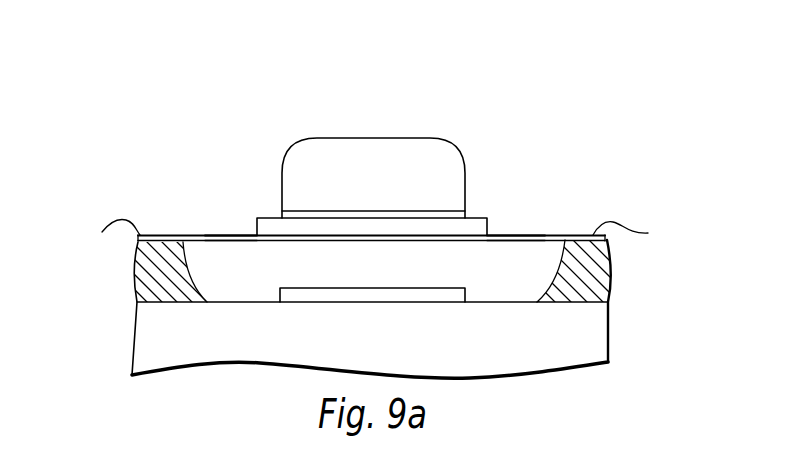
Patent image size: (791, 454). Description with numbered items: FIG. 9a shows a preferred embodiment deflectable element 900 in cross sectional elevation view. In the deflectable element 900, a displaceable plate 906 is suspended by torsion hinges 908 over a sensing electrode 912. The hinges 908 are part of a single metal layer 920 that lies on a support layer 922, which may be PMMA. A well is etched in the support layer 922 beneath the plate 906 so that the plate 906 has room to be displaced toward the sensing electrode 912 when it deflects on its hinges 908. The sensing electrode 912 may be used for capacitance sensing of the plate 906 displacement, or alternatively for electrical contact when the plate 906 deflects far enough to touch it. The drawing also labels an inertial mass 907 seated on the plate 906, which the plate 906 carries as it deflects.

The deflectable element 900 is at (546, 62).
The displaceable plate 906 is at (268, 218).
The inertial mass 907 is at (365, 146).
The torsion hinge 908 is at (235, 234).
The sensing electrode 912 is at (368, 302).
The metal layer 920 is at (373, 232).
The support layer 922 is at (178, 295).